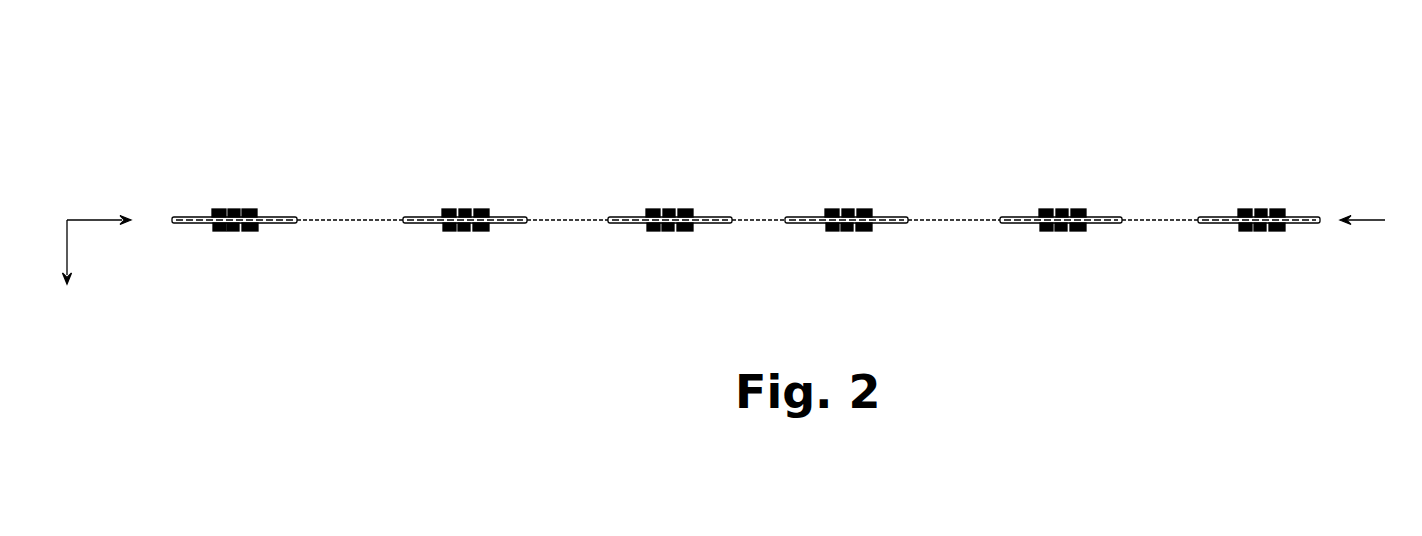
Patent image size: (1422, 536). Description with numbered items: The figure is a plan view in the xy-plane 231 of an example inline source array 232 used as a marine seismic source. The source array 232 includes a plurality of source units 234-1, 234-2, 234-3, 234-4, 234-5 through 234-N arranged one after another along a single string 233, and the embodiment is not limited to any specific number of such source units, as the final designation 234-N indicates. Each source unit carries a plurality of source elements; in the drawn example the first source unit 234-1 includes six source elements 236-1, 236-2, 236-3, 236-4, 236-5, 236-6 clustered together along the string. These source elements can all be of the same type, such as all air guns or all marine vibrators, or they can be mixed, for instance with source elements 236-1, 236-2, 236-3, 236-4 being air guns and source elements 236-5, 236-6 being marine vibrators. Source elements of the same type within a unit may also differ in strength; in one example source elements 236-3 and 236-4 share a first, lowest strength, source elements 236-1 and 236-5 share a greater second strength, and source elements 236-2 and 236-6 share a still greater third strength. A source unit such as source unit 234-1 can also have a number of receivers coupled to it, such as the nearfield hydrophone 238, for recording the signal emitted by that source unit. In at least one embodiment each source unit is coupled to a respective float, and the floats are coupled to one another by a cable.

The xy-plane 231 is at (67, 219).
The inline source array 232 is at (186, 352).
The single string 233 is at (1381, 221).
The source unit 234-1 is at (244, 197).
The source unit 234-2 is at (498, 183).
The source unit 234-3 is at (701, 183).
The source unit 234-4 is at (879, 183).
The source unit 234-5 is at (1092, 183).
The source unit 234-N is at (1290, 183).
The source element 236-1 is at (218, 212).
The source element 236-2 is at (236, 211).
The source element 236-3 is at (253, 212).
The source element 236-4 is at (218, 230).
The source element 236-5 is at (236, 231).
The source element 236-6 is at (255, 230).
The nearfield hydrophone 238 is at (188, 223).